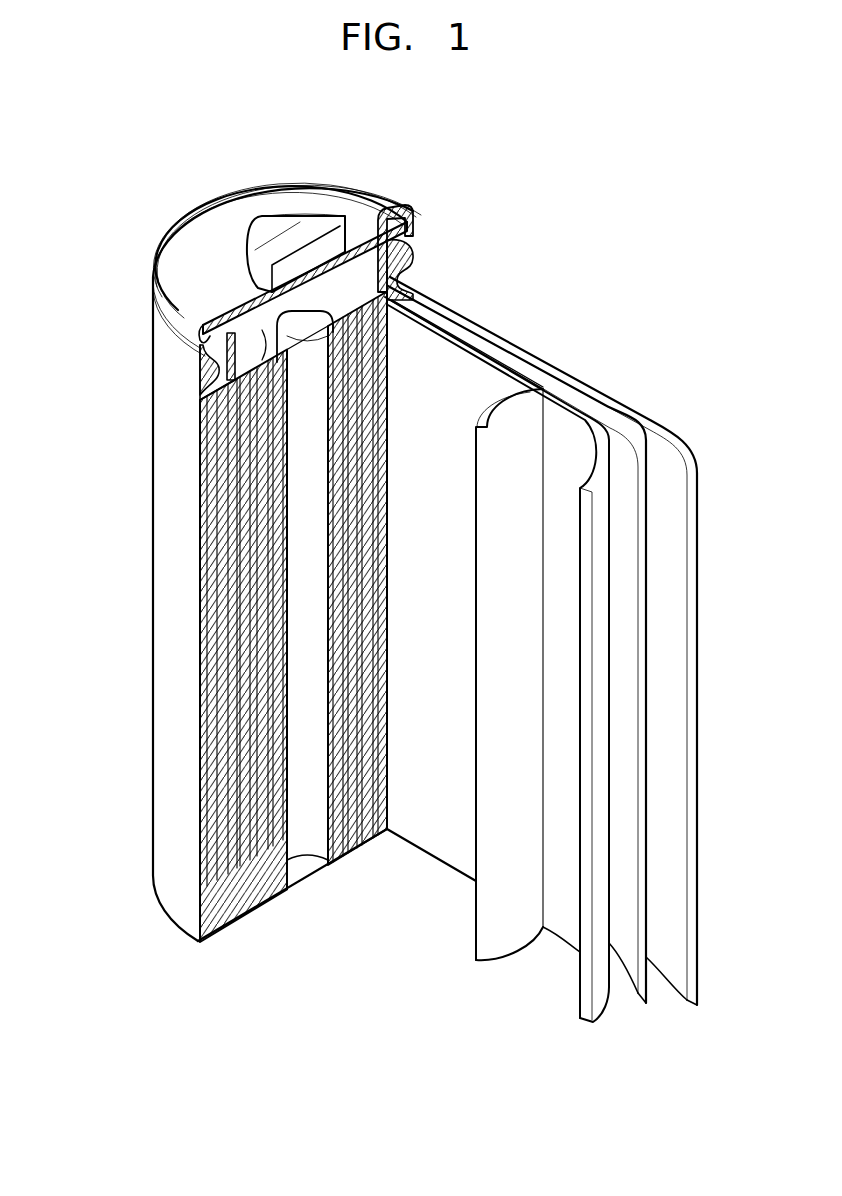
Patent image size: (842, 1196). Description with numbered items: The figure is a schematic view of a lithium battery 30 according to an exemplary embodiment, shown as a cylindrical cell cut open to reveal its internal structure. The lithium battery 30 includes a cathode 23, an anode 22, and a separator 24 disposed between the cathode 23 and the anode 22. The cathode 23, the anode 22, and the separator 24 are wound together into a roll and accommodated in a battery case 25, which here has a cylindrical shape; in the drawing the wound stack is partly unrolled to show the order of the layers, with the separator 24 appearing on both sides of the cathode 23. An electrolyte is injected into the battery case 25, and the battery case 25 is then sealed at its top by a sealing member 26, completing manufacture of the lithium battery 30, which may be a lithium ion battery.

The lithium battery 30 is at (534, 149).
The sealing member 26 is at (283, 228).
The battery case 25 is at (165, 605).
The separator 24 is at (483, 352).
The cathode 23 is at (565, 405).
The anode 22 is at (682, 456).